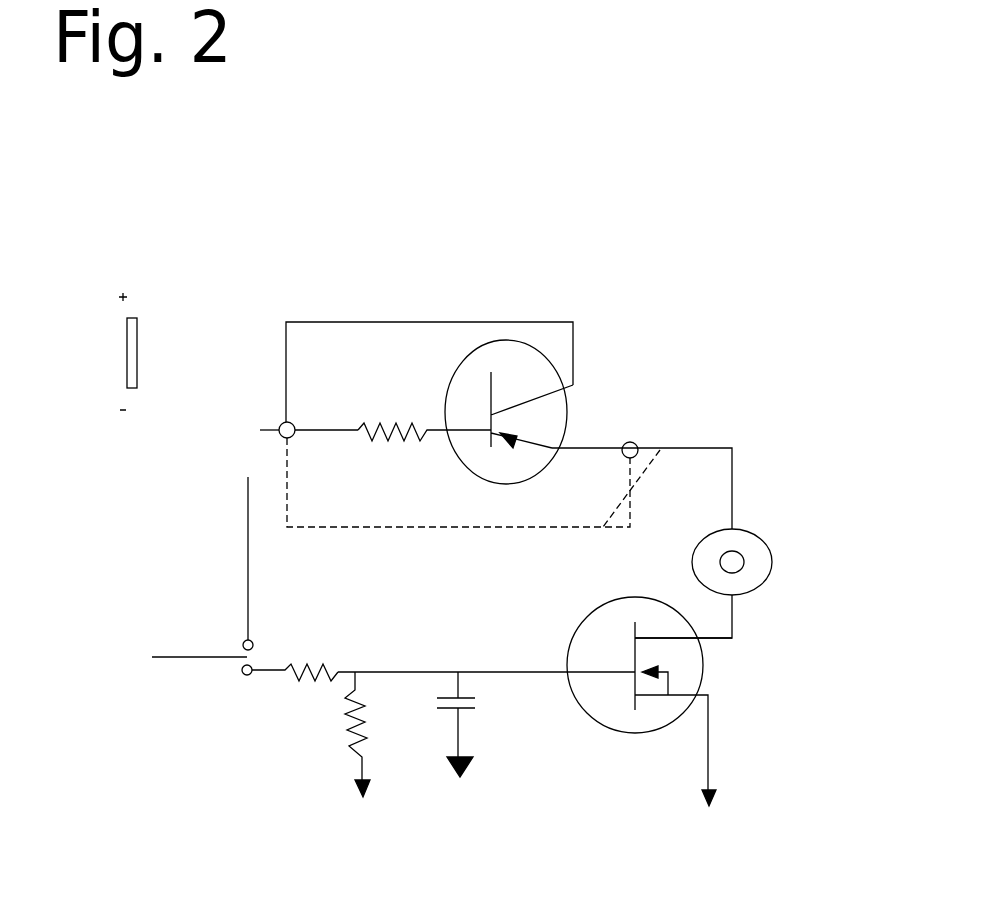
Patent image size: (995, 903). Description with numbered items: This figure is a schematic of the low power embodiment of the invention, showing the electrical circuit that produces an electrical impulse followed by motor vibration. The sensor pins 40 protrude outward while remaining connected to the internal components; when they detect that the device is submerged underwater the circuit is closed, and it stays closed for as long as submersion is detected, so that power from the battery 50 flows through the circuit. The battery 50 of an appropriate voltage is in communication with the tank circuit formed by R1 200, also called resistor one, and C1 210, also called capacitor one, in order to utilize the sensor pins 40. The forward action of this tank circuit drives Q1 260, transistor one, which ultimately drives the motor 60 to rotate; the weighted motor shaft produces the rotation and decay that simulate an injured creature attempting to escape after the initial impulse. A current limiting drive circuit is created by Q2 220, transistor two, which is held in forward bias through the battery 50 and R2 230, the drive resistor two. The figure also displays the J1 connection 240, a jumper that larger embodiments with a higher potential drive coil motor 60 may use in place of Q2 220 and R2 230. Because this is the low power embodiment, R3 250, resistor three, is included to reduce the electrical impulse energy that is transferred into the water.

The sensor pins 40 is at (243, 582).
The battery 50 is at (109, 351).
The motor 60 is at (742, 528).
The R1 200 is at (338, 715).
The C1 210 is at (472, 713).
The Q2 220 is at (567, 408).
The R2 230 is at (287, 443).
The J1 connection 240 is at (663, 450).
The R3 250 is at (152, 657).
The Q1 260 is at (673, 717).